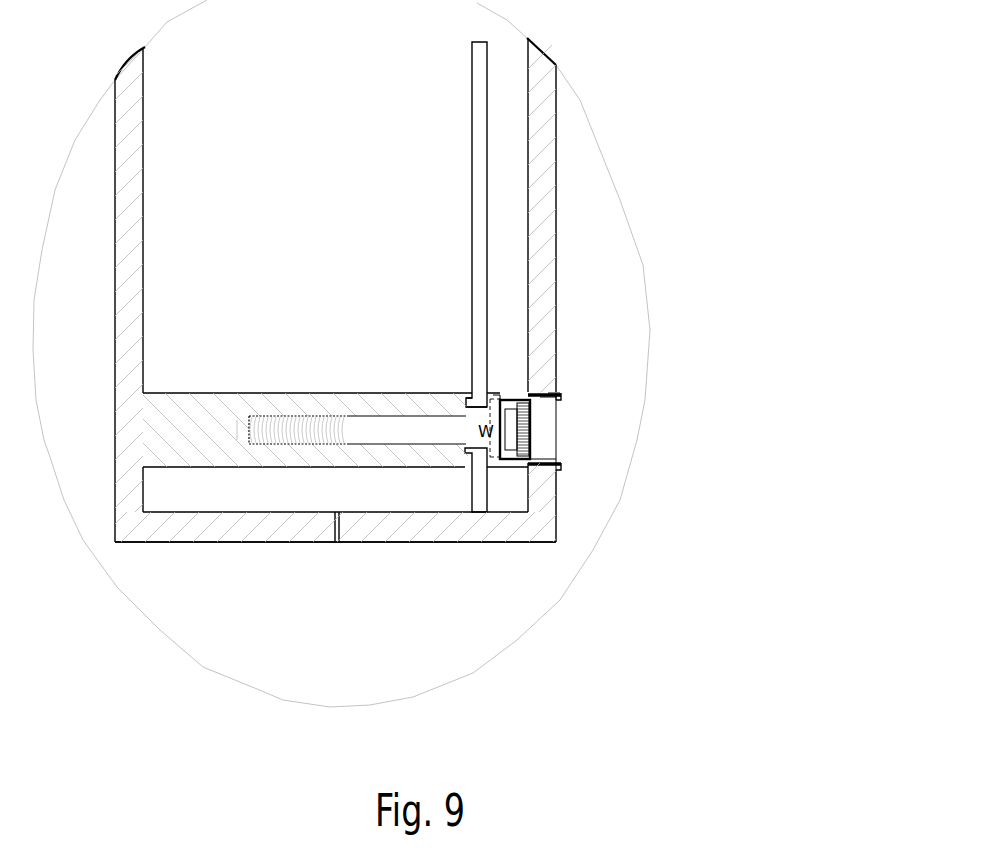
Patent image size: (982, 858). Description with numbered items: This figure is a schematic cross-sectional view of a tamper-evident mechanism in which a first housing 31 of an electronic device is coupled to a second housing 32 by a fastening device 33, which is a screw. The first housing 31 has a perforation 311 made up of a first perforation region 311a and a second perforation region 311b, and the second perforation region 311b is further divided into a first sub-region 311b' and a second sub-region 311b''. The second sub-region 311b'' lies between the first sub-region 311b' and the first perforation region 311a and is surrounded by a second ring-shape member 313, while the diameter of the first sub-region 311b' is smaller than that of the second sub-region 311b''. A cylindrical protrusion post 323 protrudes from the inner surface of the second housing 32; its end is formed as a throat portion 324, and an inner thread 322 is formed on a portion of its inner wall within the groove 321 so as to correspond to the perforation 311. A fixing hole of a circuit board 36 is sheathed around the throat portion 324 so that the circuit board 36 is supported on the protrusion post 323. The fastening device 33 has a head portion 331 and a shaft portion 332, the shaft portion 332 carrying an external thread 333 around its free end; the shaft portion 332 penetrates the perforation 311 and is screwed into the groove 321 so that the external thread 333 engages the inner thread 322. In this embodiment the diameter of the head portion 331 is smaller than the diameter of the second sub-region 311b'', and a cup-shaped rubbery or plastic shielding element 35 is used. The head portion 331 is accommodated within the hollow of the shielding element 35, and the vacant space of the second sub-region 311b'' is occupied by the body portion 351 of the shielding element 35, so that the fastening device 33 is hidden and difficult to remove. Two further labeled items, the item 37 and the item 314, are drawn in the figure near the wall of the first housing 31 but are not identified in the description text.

The first housing 31 is at (543, 173).
The second housing 32 is at (130, 183).
The fastening device 33 is at (678, 556).
The shielding element 35 is at (531, 460).
The circuit board 36 is at (478, 113).
The gap 37 is at (560, 468).
The perforation 311 is at (809, 347).
The first perforation region 311a is at (560, 397).
The second perforation region 311b is at (679, 351).
The first sub-region 311b' is at (638, 345).
The second sub-region 311b'' is at (635, 370).
The second ring-shape member 313 is at (497, 400).
The projection 314 is at (527, 397).
The groove 321 is at (442, 415).
The inner thread 322 is at (312, 410).
The protrusion post 323 is at (235, 412).
The throat portion 324 is at (482, 392).
The head portion 331 is at (560, 470).
The shaft portion 332 is at (467, 450).
The external thread 333 is at (340, 513).
The body portion 351 is at (531, 412).